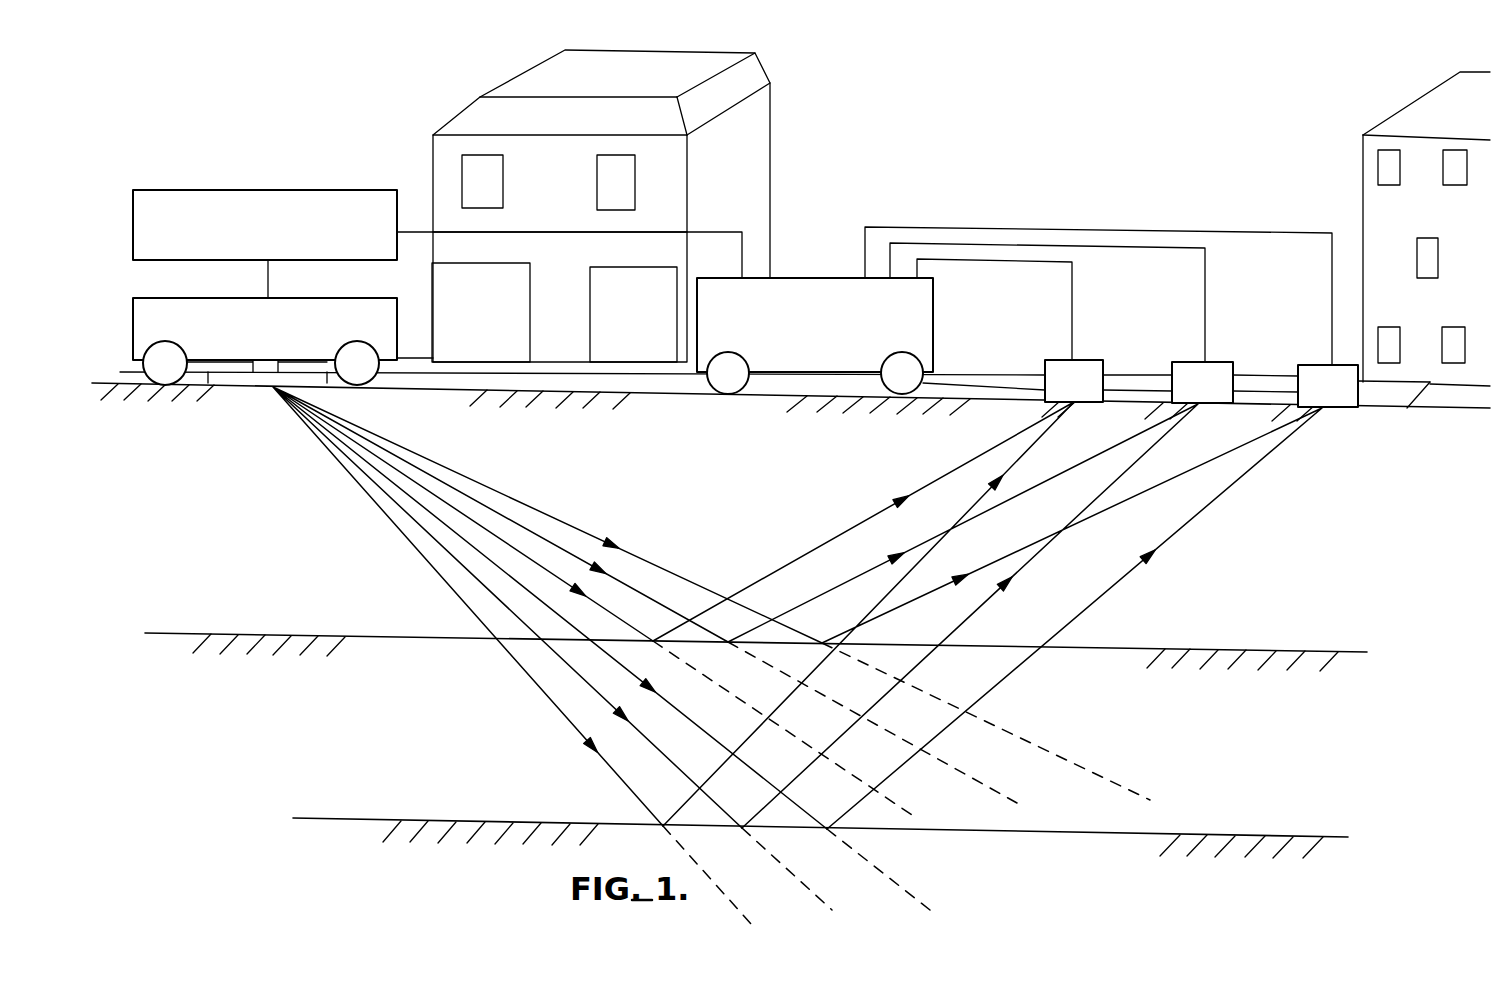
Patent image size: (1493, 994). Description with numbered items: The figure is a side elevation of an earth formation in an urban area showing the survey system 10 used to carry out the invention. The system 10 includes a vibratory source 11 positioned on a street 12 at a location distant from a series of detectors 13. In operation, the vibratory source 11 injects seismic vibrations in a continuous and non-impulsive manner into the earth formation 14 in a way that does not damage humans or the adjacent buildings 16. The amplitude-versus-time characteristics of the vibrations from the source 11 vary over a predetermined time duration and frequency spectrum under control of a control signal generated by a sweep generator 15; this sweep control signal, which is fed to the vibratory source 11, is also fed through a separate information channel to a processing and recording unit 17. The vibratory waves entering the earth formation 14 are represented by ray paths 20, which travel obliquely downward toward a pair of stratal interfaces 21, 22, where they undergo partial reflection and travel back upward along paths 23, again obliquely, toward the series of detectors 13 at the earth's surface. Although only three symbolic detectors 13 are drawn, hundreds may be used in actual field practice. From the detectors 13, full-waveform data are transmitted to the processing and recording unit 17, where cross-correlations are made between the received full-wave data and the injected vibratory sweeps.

The seismic exploration system 10 is at (805, 234).
The vibrator 11 is at (133, 326).
The baseplate 12 is at (243, 378).
The detectors 13 is at (1105, 364).
The earth 14 is at (218, 547).
The sweep generator 15 is at (133, 250).
The buildings 16 is at (742, 162).
The correlator recorder 17 is at (697, 308).
The downgoing seismic waves 20 is at (473, 520).
The first reflecting layer 21 is at (360, 633).
The second reflecting layer 22 is at (444, 820).
The reflected seismic waves 23 is at (1110, 507).